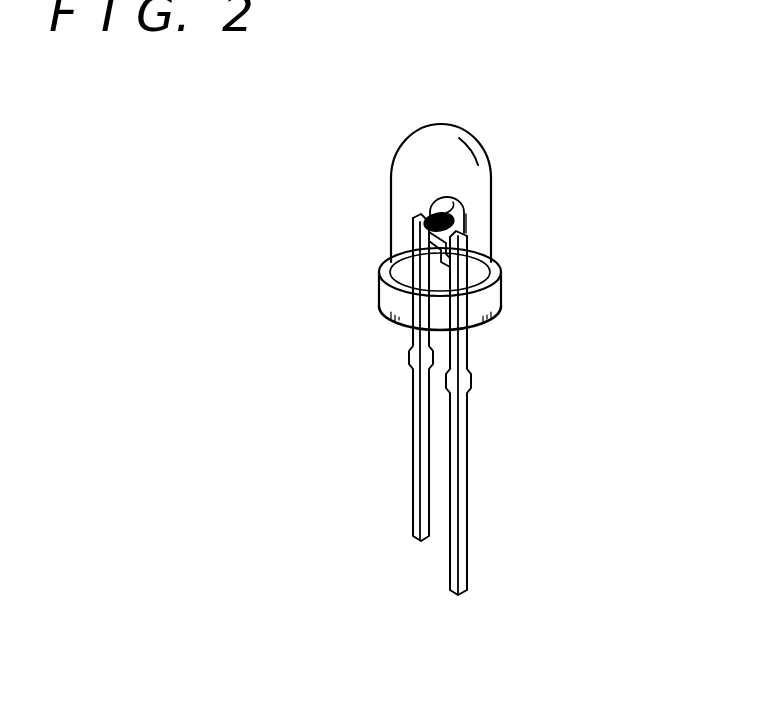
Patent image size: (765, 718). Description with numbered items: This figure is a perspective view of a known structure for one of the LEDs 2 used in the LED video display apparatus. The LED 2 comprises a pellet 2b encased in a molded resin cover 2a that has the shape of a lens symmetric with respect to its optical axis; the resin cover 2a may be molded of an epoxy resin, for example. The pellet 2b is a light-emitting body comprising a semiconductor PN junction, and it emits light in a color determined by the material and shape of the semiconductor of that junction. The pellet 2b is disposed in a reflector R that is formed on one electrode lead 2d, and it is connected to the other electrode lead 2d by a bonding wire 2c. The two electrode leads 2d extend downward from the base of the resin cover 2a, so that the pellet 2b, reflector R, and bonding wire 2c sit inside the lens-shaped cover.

The LED 2 is at (243, 178).
The molded resin cover 2a is at (490, 215).
The pellet 2b is at (414, 218).
The bonding wire 2c is at (453, 202).
The electrode lead 2d is at (413, 436).
The reflector R is at (415, 233).